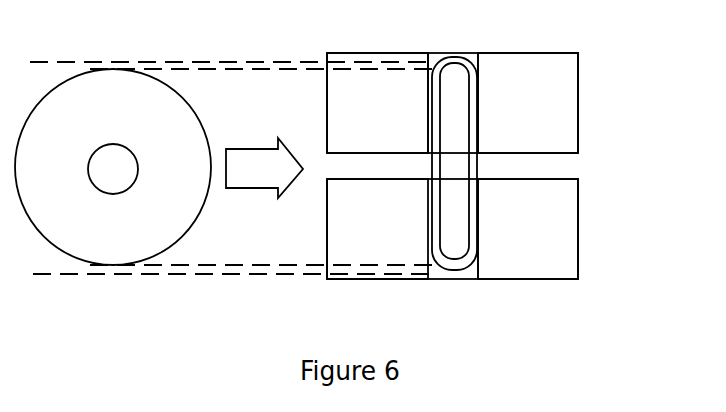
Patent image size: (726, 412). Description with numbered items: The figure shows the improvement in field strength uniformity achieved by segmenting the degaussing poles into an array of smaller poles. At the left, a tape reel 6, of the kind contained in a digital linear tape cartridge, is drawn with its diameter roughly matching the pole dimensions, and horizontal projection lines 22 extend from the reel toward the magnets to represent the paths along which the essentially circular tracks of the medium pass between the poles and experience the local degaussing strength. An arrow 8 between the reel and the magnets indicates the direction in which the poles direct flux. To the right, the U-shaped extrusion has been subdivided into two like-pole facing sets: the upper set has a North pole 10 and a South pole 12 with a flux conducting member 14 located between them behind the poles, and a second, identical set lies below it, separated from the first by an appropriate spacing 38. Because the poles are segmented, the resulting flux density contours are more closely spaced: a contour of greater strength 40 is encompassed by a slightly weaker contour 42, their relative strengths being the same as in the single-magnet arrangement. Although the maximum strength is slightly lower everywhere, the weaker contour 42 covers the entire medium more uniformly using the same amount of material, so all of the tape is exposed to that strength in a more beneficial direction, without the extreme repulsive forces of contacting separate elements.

The tape reel 6 is at (118, 70).
The horizontal projection lines 22 is at (270, 63).
The arrow 8 is at (288, 188).
The North pole 10 is at (372, 73).
The flux conducting member 14 is at (467, 58).
The South pole 12 is at (530, 73).
The spacing 38 is at (570, 163).
The contour of greater strength 40 is at (472, 272).
The contour of lesser strength 42 is at (468, 252).